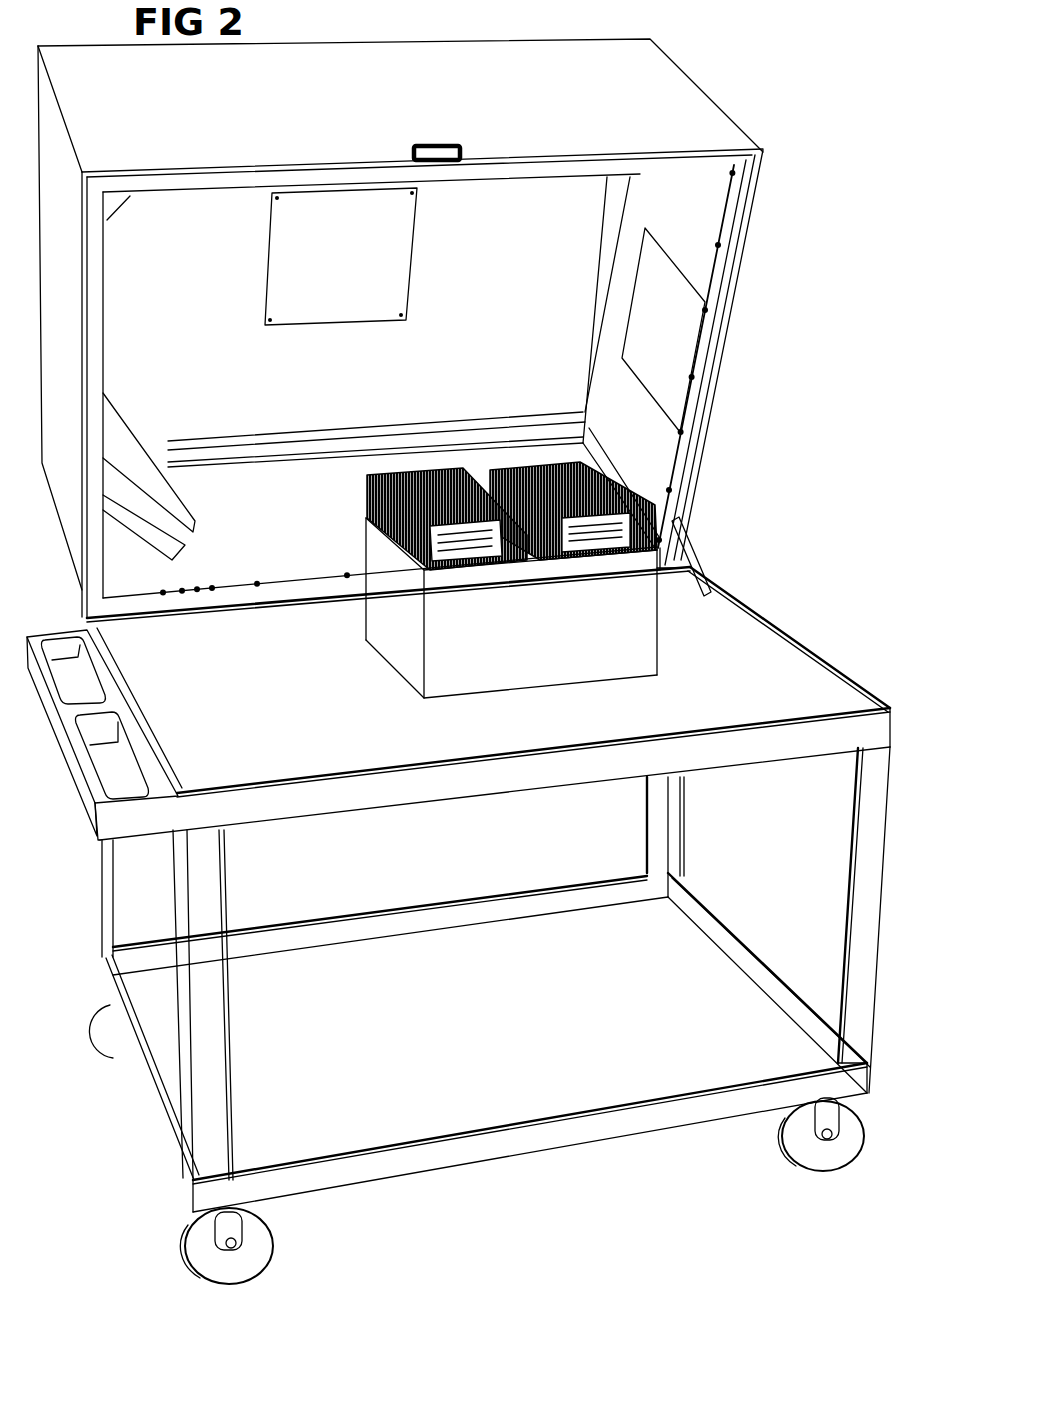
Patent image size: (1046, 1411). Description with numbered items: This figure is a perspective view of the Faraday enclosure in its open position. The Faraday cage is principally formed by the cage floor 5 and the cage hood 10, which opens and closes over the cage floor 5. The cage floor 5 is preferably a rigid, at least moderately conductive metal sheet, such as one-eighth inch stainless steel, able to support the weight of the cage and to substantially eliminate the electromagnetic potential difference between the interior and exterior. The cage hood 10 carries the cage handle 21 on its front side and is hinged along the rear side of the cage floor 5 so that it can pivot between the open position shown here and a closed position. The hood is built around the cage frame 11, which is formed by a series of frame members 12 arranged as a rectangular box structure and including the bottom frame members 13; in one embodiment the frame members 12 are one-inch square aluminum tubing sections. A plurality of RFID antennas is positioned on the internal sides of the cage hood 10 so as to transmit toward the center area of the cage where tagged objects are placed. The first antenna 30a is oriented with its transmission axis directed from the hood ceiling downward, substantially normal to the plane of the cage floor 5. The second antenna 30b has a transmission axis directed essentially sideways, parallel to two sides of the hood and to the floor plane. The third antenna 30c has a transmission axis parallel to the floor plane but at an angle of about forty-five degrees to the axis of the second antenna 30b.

The cage floor 5 is at (545, 714).
The cage hood 10 is at (572, 77).
The cage frame 11 is at (800, 185).
The frame members 12 is at (585, 390).
The bottom frame members 13 is at (655, 165).
The cage handle 21 is at (467, 150).
The first antenna 30a is at (348, 242).
The second antenna 30b is at (655, 328).
The third antenna 30c is at (583, 444).